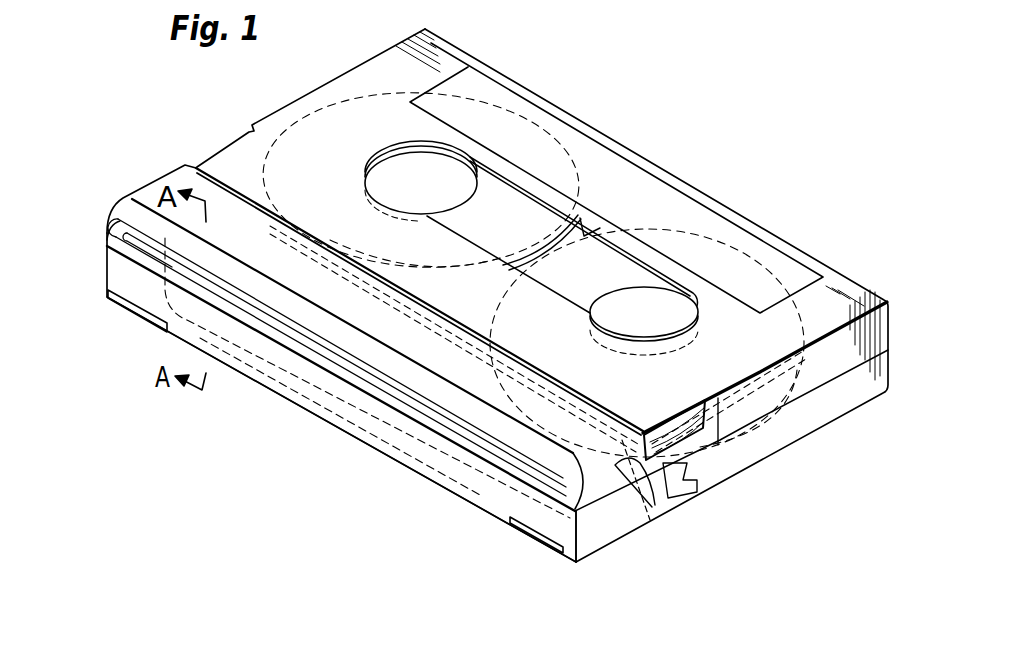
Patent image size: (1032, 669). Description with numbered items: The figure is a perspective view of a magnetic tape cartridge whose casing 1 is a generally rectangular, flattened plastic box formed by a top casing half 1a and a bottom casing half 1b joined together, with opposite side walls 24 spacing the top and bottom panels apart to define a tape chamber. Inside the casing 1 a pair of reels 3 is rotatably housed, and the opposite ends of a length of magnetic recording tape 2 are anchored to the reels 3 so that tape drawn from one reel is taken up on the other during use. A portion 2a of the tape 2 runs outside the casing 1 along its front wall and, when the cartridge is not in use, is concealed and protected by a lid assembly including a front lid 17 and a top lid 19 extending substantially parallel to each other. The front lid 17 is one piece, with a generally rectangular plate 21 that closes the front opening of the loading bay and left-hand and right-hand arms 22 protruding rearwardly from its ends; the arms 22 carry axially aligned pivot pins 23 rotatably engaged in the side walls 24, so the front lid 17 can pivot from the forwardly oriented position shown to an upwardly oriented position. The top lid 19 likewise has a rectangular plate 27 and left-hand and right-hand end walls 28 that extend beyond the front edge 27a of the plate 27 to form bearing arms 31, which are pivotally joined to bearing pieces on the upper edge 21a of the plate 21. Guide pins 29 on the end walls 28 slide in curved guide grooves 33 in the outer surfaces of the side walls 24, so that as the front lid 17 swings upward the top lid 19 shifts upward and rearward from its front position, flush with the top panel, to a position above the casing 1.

The casing 1 is at (898, 438).
The top casing half 1a is at (847, 362).
The bottom casing half 1b is at (823, 410).
The magnetic recording tape 2 is at (233, 217).
The portion of magnetic recording tape 2a is at (303, 386).
The reels 3 is at (513, 108).
The front lid 17 is at (402, 470).
The top lid 19 is at (152, 184).
The rectangular plate 21 is at (462, 493).
The upper edge 21a is at (511, 361).
The arms 22 is at (595, 538).
The pivot pins 23 is at (612, 455).
The side walls 24 is at (710, 432).
The rectangular plate 27 is at (352, 284).
The front edge 27a is at (348, 417).
The end walls 28 is at (613, 456).
The guide pins 29 is at (658, 500).
The bearing arms 31 is at (110, 227).
The guide grooves 33 is at (700, 406).